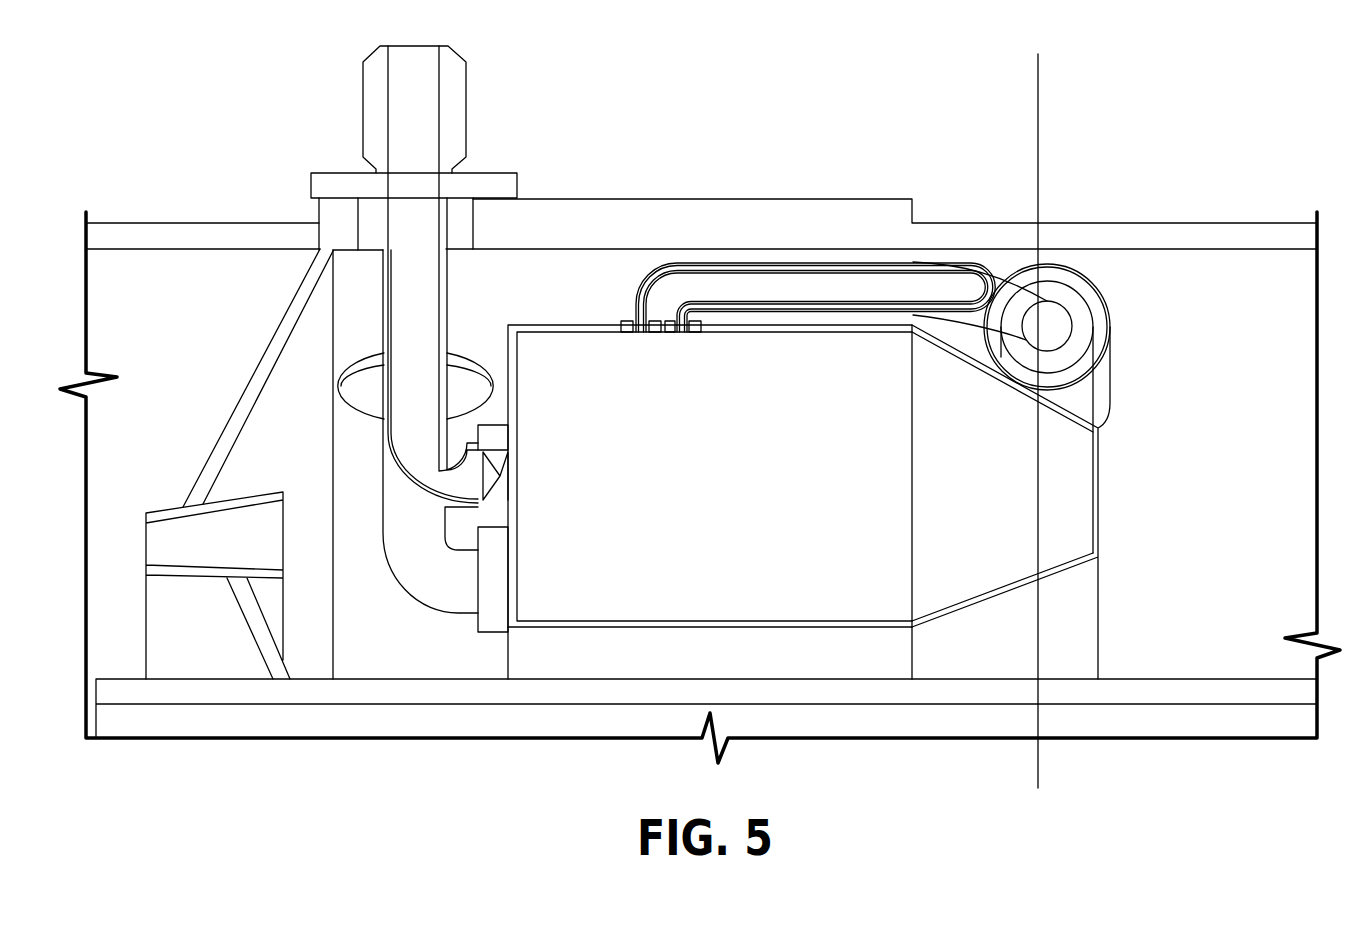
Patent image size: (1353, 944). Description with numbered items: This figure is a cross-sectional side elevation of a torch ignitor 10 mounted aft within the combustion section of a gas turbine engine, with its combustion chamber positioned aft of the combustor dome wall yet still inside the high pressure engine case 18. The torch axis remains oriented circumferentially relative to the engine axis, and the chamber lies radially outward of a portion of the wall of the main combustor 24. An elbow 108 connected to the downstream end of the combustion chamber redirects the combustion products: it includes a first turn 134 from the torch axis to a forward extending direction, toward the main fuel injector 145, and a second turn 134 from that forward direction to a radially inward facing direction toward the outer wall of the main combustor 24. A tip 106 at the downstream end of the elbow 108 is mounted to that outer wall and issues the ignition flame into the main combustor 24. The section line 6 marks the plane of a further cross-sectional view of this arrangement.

The main fuel injector 145 is at (395, 150).
The high pressure engine case 18 is at (845, 212).
The turn of the elbow 134 is at (678, 263).
The tip 106 is at (640, 318).
The elbow 108 is at (988, 270).
The torch ignitor 10 is at (1097, 270).
The main combustor 24 is at (643, 470).
The section line 6- 6 is at (1038, 54).